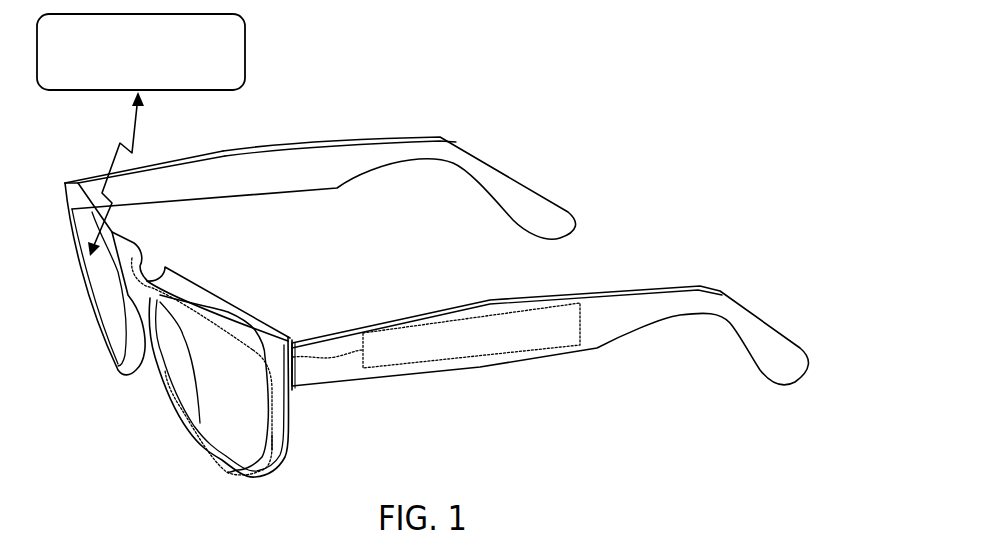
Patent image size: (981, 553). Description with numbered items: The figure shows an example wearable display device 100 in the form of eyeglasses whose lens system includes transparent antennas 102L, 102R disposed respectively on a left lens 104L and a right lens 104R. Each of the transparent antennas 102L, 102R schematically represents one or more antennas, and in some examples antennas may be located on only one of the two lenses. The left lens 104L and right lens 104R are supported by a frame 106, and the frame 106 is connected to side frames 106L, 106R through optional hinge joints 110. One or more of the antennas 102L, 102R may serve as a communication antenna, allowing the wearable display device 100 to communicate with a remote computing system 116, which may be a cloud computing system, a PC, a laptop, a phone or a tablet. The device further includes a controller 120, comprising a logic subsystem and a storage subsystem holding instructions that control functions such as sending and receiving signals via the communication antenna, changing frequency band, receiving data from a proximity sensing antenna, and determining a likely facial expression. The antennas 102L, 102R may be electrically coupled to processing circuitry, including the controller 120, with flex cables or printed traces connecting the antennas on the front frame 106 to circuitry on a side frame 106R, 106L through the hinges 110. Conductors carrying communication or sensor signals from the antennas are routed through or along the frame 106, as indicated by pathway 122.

The wearable display device 100 is at (703, 62).
The transparent antenna 102L is at (220, 406).
The transparent antenna 102R is at (103, 293).
The left lens 104L is at (236, 318).
The right lens 104R is at (124, 250).
The frame 106 is at (216, 292).
The side frame 106L is at (550, 315).
The side frame 106R is at (308, 160).
The hinge joint 110 is at (86, 185).
The remote computing system 116 is at (141, 135).
The controller 120 is at (436, 335).
The pathway 122 is at (273, 436).